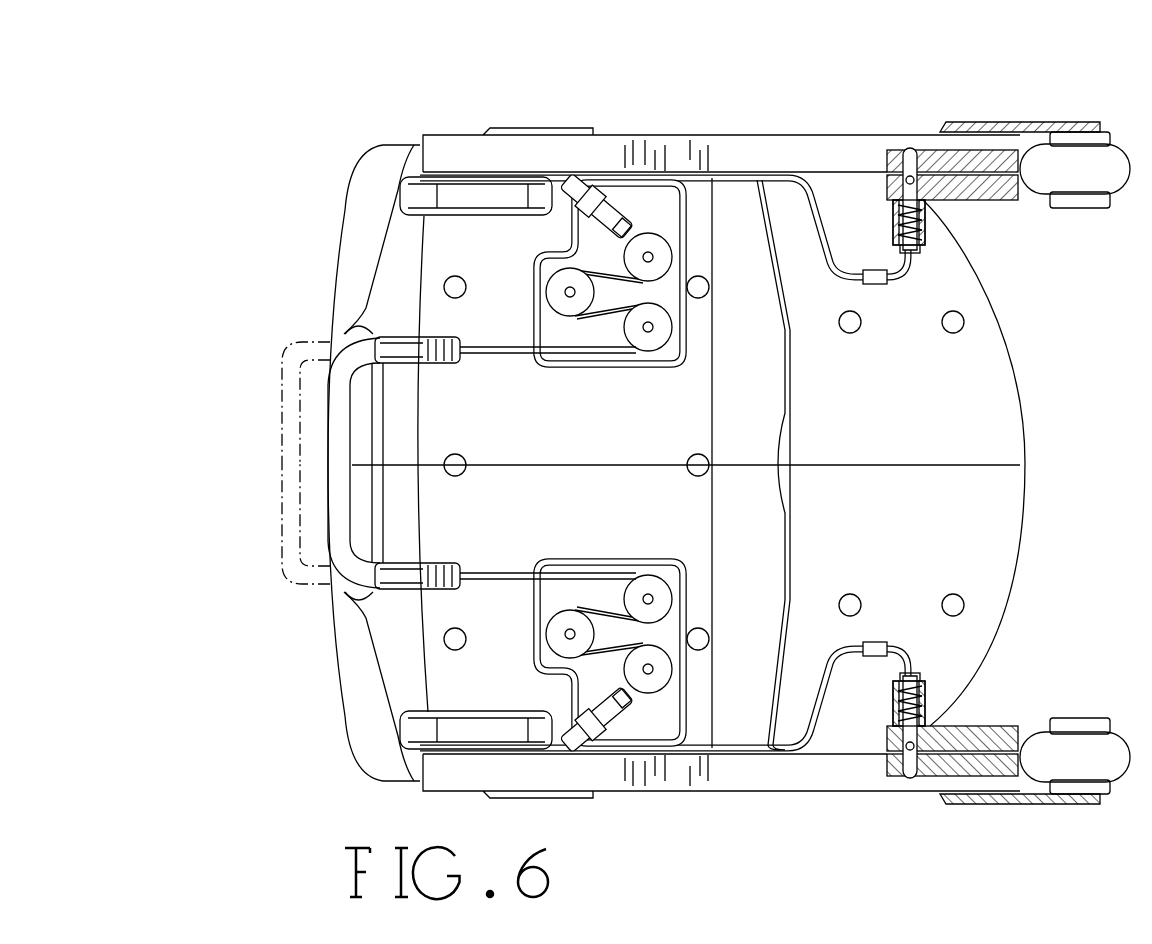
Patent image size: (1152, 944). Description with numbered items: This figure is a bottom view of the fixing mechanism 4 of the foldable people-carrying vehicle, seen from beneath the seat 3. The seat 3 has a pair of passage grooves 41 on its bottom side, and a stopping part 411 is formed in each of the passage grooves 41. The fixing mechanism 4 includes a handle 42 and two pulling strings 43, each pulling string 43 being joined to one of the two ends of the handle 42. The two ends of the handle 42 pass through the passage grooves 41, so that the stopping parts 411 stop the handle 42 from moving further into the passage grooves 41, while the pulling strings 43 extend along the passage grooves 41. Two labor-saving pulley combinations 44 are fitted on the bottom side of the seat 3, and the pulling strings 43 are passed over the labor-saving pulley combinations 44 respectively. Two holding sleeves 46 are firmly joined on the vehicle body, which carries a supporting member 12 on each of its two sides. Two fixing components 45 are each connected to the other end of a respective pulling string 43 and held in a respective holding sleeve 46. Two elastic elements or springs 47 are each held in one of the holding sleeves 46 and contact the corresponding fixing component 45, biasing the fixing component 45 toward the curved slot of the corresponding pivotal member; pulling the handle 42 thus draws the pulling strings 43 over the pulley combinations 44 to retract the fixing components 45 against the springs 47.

The seat 3 is at (993, 363).
The fixing mechanism 4 is at (258, 489).
The supporting member 12 is at (977, 122).
The passage groove 41 is at (483, 566).
The stopping part 411 is at (432, 343).
The handle 42 is at (288, 407).
The pulling string 43 is at (653, 703).
The labor-saving pulley combination 44 is at (650, 257).
The fixing component 45 is at (912, 770).
The holding sleeve 46 is at (918, 705).
The elastic element (spring) 47 is at (923, 730).